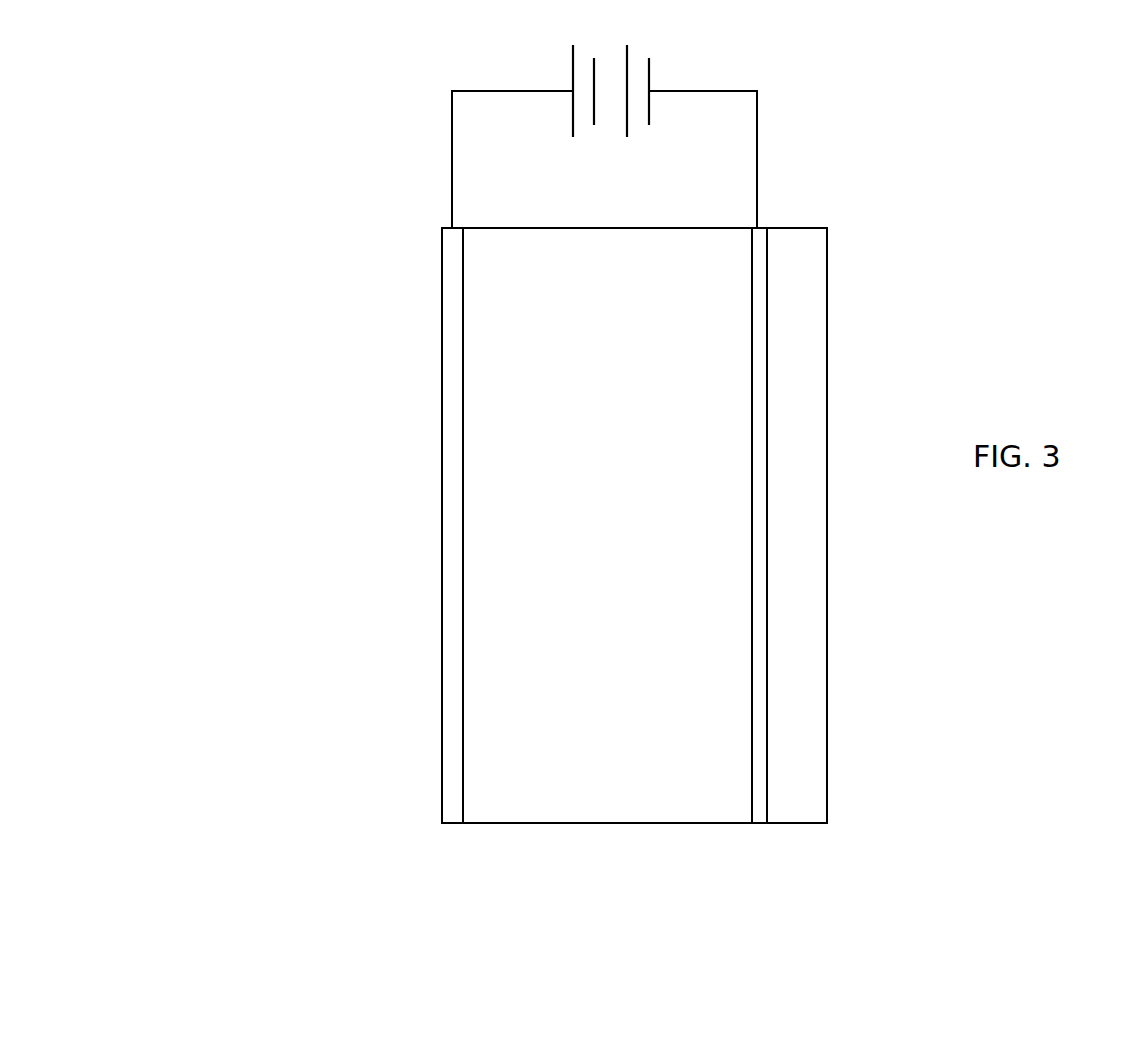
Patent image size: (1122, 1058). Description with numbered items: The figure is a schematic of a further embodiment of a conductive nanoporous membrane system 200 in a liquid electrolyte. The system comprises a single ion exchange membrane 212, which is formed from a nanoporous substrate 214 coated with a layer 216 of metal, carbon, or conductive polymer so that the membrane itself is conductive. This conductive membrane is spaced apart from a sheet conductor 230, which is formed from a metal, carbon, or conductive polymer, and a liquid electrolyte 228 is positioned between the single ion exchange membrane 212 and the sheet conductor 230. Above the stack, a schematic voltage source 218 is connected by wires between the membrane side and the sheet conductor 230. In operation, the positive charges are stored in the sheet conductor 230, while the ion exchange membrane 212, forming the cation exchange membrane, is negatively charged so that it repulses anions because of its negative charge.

The conductive nanoporous membrane system 200 is at (235, 109).
The single ion exchange membrane 212 is at (798, 227).
The nanoporous substrate 214 is at (807, 827).
The layer 216 is at (757, 792).
The voltage source / battery 218 is at (650, 77).
The liquid electrolyte 228 is at (653, 495).
The sheet conductor 230 is at (448, 570).